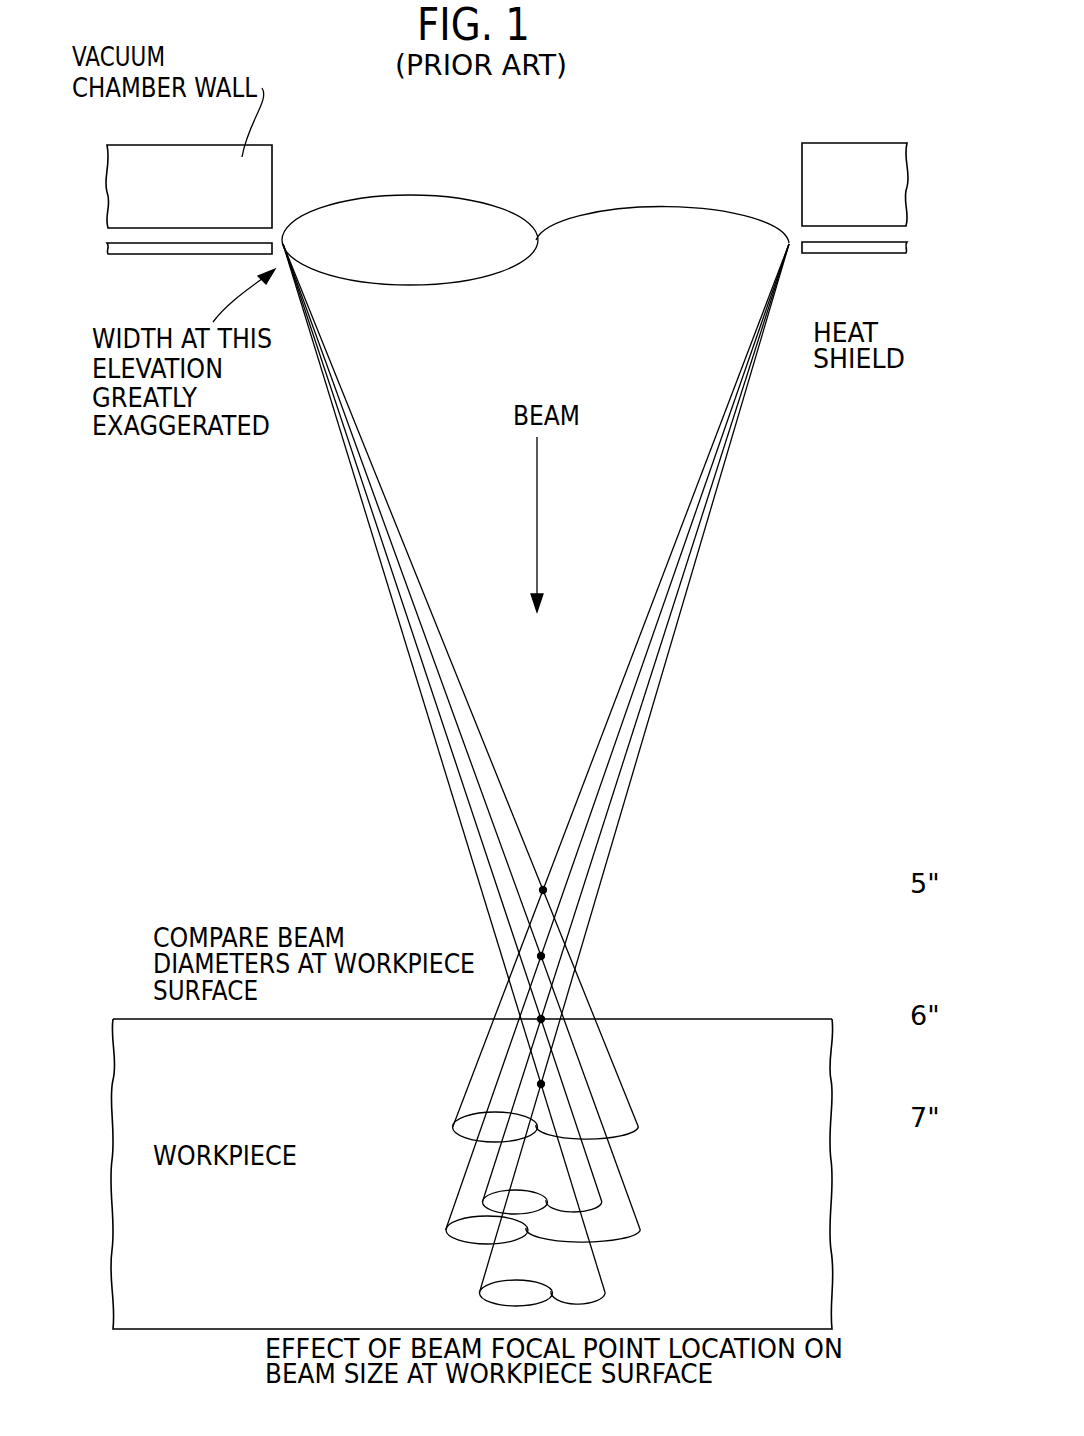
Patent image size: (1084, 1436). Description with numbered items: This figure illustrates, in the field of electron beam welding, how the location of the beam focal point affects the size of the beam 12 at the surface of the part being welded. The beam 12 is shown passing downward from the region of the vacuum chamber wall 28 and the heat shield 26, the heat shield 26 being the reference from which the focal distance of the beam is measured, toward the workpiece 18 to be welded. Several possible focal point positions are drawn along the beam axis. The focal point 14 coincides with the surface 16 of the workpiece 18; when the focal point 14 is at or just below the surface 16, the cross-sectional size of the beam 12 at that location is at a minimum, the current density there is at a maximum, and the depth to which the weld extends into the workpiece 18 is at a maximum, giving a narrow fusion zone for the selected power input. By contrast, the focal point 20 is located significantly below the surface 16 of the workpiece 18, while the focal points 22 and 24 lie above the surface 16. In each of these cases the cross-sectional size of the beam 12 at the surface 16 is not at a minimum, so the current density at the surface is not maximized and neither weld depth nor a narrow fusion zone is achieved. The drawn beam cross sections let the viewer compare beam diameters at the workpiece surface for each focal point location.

The beam 12 is at (537, 490).
The focal point 14 is at (541, 1019).
The surface 16 is at (810, 1019).
The workpiece 18 is at (147, 1042).
The focal point 20 is at (541, 1084).
The focal point 22 is at (541, 956).
The focal point 24 is at (543, 890).
The heat shield 26 is at (816, 246).
The vacuum chamber wall 28 is at (252, 152).